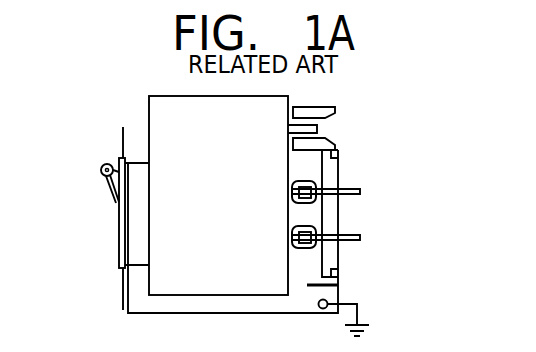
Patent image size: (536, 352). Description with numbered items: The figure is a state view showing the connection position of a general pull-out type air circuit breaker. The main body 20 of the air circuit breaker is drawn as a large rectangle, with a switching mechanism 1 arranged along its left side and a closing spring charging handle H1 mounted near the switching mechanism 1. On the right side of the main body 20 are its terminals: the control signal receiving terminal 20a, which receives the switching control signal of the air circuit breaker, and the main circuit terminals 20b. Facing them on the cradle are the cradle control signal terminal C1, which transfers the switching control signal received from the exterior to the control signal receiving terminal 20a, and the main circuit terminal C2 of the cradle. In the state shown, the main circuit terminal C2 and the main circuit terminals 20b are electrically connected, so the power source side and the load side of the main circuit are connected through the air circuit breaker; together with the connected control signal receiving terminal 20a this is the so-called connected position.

The main body 20 is at (168, 113).
The control signal receiving terminal 20a is at (312, 128).
The main circuit terminals 20b is at (303, 248).
The cradle control signal terminal C1 is at (320, 110).
The main circuit terminal of the cradle C2 is at (350, 237).
The closing spring charging handle H1 is at (112, 174).
The switching mechanism 1 is at (135, 237).